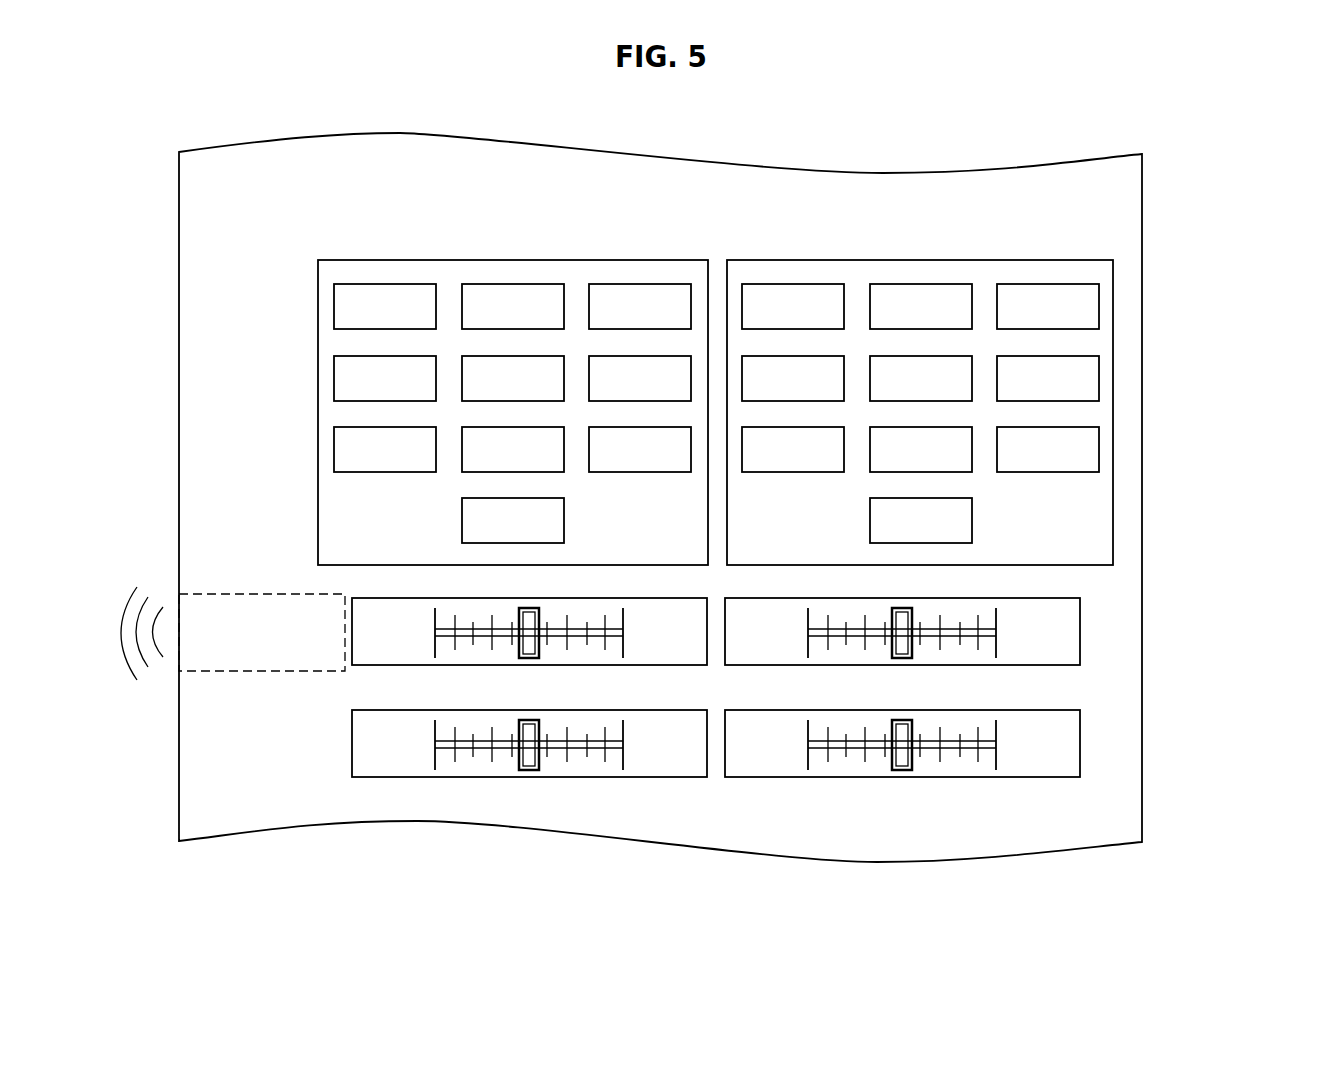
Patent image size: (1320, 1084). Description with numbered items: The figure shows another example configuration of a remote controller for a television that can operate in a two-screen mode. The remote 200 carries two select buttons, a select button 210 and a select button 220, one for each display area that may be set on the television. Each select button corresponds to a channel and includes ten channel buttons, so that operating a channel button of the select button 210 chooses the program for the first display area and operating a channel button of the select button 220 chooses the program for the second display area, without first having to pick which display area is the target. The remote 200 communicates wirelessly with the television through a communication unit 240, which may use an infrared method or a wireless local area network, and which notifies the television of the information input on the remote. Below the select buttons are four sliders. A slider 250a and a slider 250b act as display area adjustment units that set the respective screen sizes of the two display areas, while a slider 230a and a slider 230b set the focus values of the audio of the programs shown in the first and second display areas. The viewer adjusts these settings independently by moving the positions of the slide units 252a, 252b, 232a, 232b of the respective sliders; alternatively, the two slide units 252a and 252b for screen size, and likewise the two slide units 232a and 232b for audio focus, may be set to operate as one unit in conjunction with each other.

The remote 200 is at (1142, 208).
The select button 210 is at (593, 262).
The select button 220 is at (1030, 262).
The slider 230a is at (397, 789).
The slider 230b is at (1009, 781).
The slide unit 232a is at (529, 794).
The slide unit 232b is at (906, 786).
The communication unit 240 is at (222, 594).
The slider 250a is at (397, 655).
The slider 250b is at (1009, 650).
The slide unit 252a is at (584, 655).
The slide unit 252b is at (958, 655).